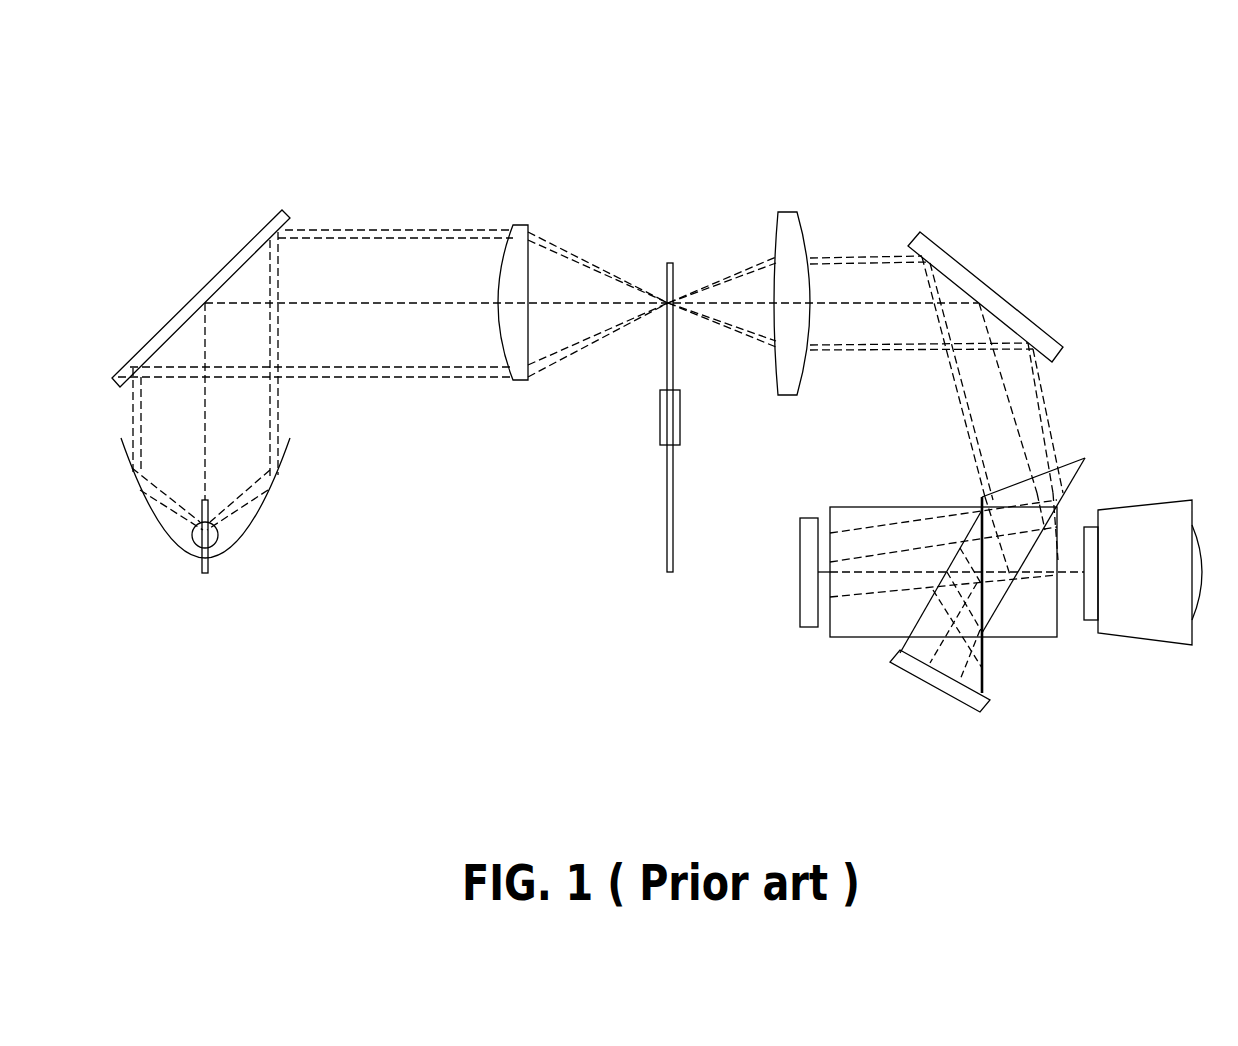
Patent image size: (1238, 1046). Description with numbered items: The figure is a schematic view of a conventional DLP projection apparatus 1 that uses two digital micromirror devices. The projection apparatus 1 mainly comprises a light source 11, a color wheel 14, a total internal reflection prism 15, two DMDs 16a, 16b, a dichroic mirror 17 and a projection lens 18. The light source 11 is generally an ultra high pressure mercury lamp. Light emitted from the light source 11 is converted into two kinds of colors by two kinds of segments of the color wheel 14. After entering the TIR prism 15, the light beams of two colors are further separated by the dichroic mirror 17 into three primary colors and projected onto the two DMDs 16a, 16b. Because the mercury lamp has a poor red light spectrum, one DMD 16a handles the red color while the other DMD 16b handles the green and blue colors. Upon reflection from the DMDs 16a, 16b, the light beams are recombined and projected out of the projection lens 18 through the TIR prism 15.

The projection apparatus 1 is at (1038, 156).
The light source 11 is at (252, 525).
The color wheel 14 is at (667, 520).
The total internal reflection (TIR) prism 15 is at (1000, 597).
The DMD 16a is at (800, 605).
The DMD 16b is at (940, 690).
The dichroic mirror 17 is at (856, 507).
The projection lens 18 is at (1144, 510).